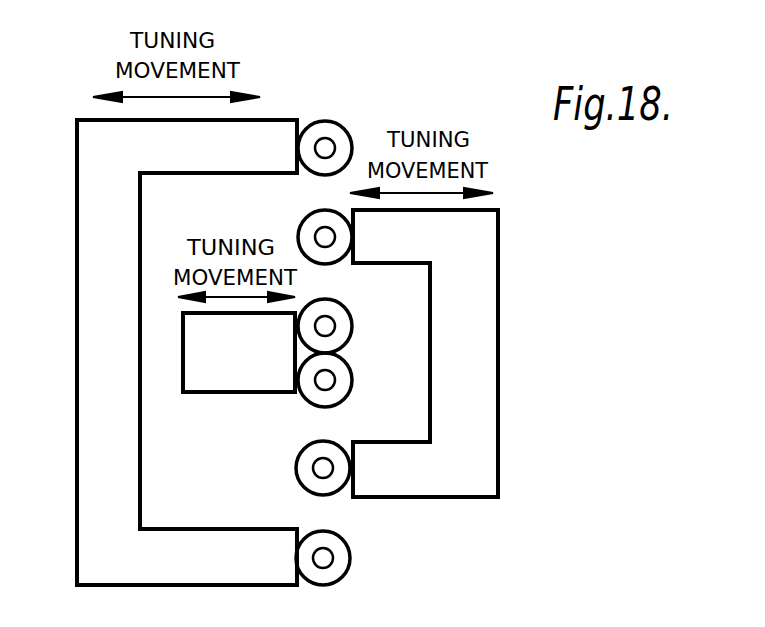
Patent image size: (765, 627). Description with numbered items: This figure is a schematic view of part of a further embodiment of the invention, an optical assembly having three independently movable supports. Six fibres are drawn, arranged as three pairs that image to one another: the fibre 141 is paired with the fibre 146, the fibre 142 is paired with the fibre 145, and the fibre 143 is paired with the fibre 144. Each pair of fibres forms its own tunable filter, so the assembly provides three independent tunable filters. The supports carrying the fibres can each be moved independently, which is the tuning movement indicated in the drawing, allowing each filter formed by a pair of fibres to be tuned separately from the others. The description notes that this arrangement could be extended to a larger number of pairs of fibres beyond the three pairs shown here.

The fibre 141 is at (332, 121).
The fibre 142 is at (311, 213).
The fibre 143 is at (341, 304).
The fibre 144 is at (351, 372).
The fibre 145 is at (297, 465).
The fibre 146 is at (349, 551).